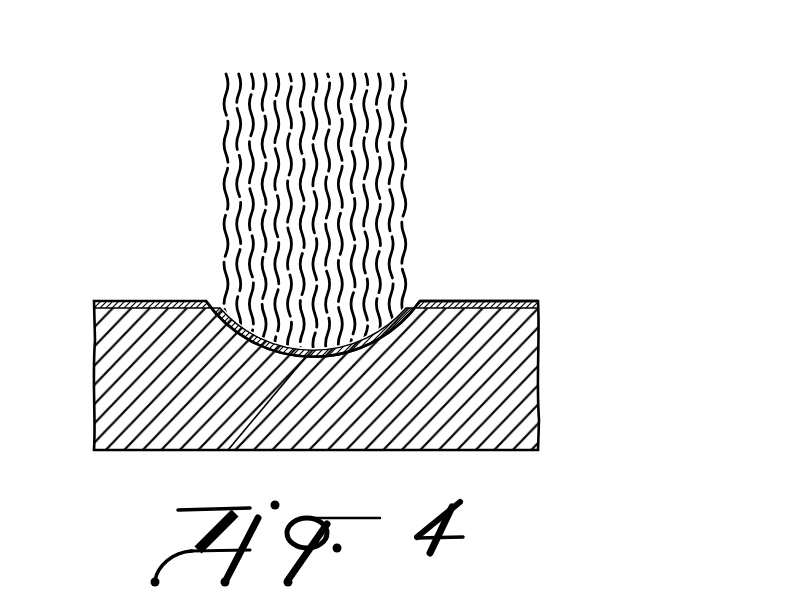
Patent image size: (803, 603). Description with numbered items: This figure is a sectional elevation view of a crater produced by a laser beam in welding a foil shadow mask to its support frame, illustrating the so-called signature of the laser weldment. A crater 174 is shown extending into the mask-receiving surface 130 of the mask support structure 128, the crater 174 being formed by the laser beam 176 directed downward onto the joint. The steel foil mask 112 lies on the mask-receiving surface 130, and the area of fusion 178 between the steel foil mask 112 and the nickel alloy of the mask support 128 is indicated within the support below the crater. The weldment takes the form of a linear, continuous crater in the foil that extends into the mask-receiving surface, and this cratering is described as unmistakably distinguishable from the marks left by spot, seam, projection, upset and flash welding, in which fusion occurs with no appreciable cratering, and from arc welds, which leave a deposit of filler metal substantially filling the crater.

The steel foil mask 112 is at (476, 300).
The mask support structure 128 is at (538, 358).
The mask-receiving surface 130 is at (146, 303).
The crater 174 is at (183, 250).
The laser beam 176 is at (412, 140).
The area of fusion 178 is at (228, 450).